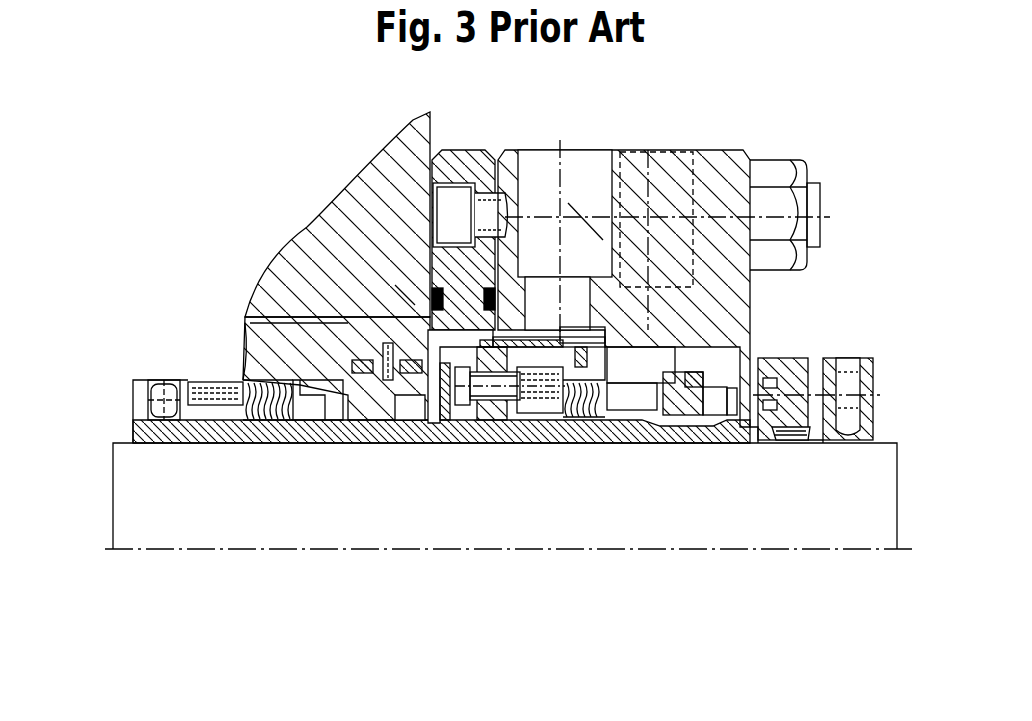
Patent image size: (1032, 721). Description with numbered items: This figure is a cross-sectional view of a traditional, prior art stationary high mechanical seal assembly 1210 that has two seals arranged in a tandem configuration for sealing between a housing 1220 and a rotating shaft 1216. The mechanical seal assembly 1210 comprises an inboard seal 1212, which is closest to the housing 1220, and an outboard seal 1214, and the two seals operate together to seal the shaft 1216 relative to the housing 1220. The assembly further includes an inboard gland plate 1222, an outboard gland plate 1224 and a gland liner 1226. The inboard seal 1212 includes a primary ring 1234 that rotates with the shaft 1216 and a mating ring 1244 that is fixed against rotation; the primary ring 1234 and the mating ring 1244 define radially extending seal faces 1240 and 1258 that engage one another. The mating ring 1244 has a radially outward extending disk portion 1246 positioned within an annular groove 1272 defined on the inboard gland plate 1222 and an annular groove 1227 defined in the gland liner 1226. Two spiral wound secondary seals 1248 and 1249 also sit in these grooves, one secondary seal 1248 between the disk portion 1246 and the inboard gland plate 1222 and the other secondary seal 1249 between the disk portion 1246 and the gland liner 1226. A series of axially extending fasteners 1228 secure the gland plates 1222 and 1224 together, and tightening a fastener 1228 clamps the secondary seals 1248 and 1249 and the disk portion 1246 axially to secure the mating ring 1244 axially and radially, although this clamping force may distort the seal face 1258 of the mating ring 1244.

The mechanical seal assembly 1210 is at (755, 137).
The inboard seal 1212 is at (293, 445).
The outboard seal 1214 is at (643, 415).
The rotating shaft 1216 is at (840, 518).
The housing 1220 is at (383, 147).
The inboard gland plate 1222 is at (455, 157).
The outboard gland plate 1224 is at (518, 157).
The gland liner 1226 is at (512, 420).
The annular groove 1227 is at (385, 335).
The fasteners 1228 is at (812, 202).
The primary ring 1234 is at (317, 445).
The seal face 1240 is at (360, 445).
The mating ring 1244 is at (403, 405).
The disk portion 1246 is at (243, 322).
The spiral wound secondary seal 1248 is at (350, 363).
The spiral wound secondary seal 1249 is at (410, 300).
The seal face 1258 is at (333, 445).
The annular groove 1272 is at (383, 347).